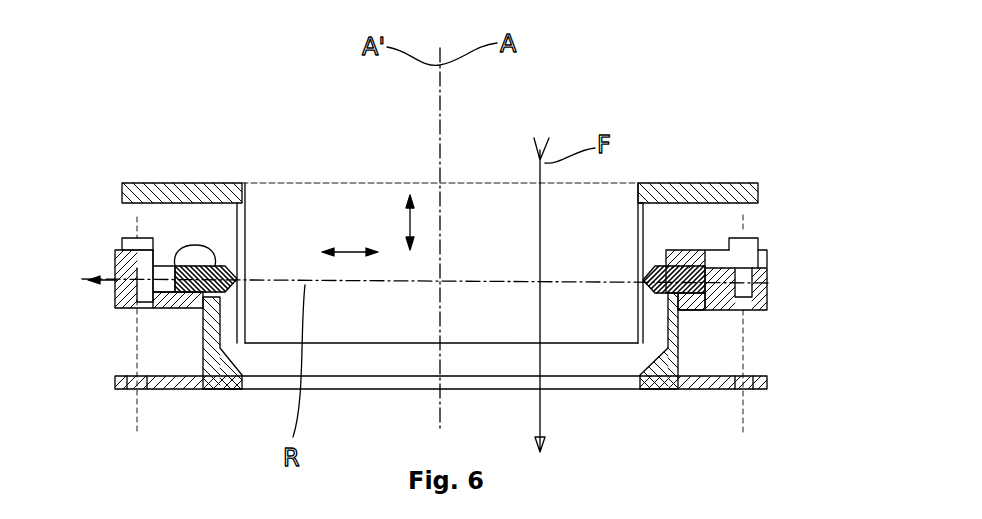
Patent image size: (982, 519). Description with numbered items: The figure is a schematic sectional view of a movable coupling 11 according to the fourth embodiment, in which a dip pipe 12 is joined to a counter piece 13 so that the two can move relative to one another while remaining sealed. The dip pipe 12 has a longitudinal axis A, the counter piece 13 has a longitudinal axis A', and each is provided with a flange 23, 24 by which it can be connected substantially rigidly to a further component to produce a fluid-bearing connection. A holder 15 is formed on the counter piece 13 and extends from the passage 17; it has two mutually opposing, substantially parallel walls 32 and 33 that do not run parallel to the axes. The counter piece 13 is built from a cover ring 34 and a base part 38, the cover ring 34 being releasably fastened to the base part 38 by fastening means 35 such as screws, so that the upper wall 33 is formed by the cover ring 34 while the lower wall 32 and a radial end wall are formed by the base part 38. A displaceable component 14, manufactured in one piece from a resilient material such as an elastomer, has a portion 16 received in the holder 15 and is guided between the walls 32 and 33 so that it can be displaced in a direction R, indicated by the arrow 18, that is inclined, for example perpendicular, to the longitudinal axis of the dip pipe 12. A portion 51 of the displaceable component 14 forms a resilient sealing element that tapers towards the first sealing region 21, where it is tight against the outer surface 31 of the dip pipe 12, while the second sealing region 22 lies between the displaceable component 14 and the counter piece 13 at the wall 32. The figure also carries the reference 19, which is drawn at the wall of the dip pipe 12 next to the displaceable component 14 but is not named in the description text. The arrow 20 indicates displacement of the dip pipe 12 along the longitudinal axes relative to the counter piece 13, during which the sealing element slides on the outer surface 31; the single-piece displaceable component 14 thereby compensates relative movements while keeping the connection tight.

The movable coupling 11 is at (692, 128).
The dip pipe 12 is at (643, 233).
The counter piece 13 is at (673, 360).
The displaceable component 14 is at (183, 267).
The holder 15 is at (172, 302).
The portion 16 is at (190, 246).
The passage 17 is at (395, 369).
The arrow 18 is at (343, 251).
The ring wall 19 is at (230, 262).
The arrow 20 is at (407, 227).
The first sealing region 21 is at (638, 282).
The second sealing region 22 is at (188, 300).
The flange 23 is at (750, 184).
The flange 24 is at (718, 389).
The outer surface 31 is at (640, 220).
The lower wall 32 is at (723, 283).
The upper wall 33 is at (167, 290).
The cover ring 34 is at (120, 262).
The fastening means 35 is at (747, 245).
The base part 38 is at (122, 297).
The portion 51 is at (653, 298).